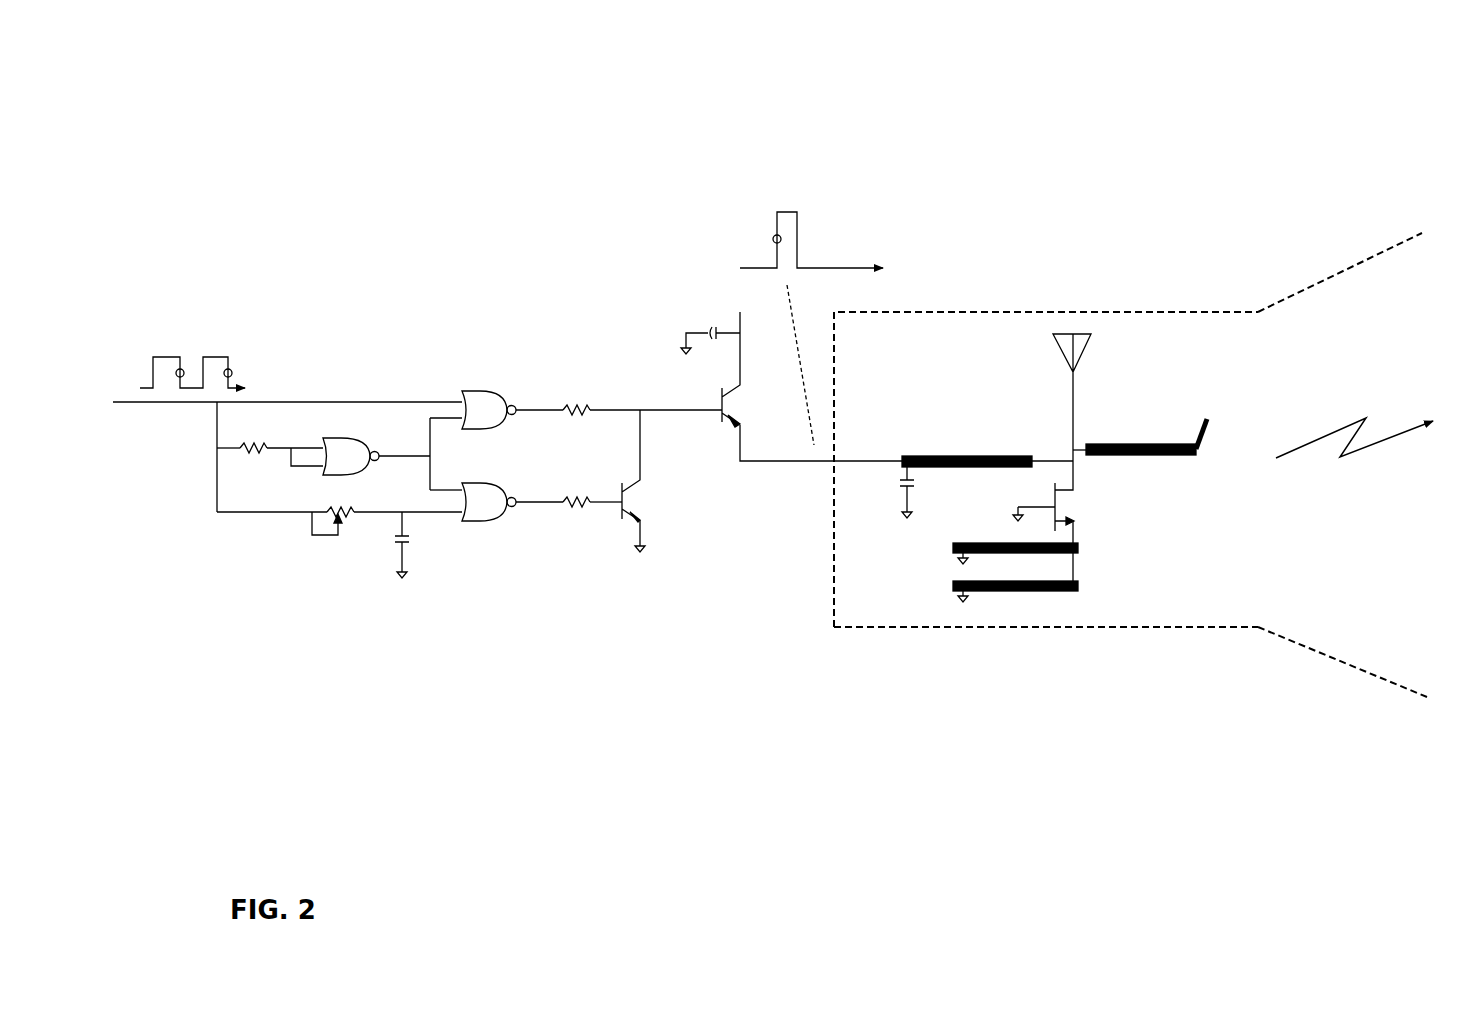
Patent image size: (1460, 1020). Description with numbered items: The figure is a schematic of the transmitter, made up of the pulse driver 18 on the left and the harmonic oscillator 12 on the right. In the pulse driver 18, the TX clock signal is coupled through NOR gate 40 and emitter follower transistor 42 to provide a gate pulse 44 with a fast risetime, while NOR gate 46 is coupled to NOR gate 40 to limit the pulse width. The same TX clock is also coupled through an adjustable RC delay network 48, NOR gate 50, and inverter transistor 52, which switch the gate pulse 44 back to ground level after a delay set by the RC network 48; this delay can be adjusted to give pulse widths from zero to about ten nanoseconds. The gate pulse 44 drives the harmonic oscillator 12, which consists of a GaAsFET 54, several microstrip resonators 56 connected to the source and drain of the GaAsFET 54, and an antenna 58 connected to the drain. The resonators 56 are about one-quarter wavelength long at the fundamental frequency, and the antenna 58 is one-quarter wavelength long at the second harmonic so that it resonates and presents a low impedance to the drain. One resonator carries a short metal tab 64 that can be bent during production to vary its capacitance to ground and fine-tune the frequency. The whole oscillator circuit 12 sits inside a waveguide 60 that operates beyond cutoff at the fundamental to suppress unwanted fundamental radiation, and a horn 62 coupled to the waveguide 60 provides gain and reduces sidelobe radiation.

The harmonic oscillator 12 is at (1136, 191).
The pulse driver 18 is at (404, 199).
The NOR gate 40 is at (493, 388).
The emitter follower transistor 42 is at (722, 445).
The gate pulse 44 is at (806, 220).
The NOR gate 46 is at (300, 475).
The adjustable RC delay network 48 is at (343, 572).
The NOR gate 50 is at (493, 528).
The inverter transistor 52 is at (647, 530).
The GaAsFET 54 is at (1083, 519).
The microstrip resonators 56 is at (1017, 614).
The antenna 58 is at (1093, 347).
The waveguide 60 is at (1186, 625).
The horn 62 is at (1342, 660).
The metal tab 64 is at (1210, 413).